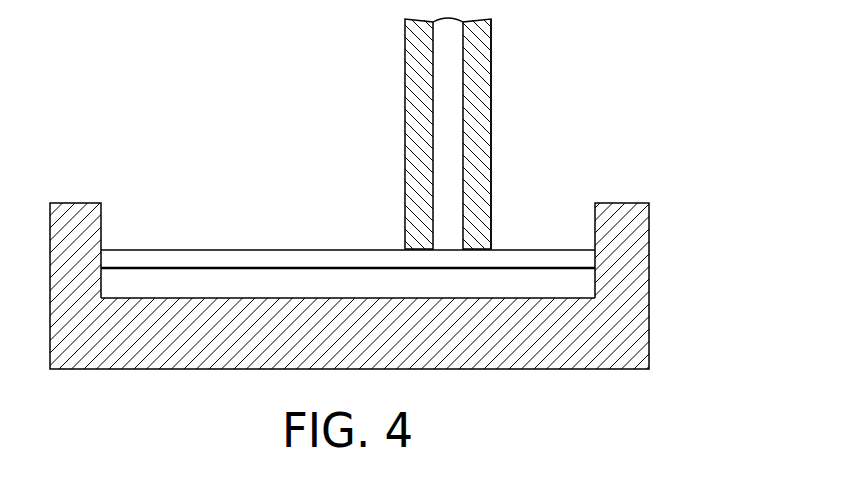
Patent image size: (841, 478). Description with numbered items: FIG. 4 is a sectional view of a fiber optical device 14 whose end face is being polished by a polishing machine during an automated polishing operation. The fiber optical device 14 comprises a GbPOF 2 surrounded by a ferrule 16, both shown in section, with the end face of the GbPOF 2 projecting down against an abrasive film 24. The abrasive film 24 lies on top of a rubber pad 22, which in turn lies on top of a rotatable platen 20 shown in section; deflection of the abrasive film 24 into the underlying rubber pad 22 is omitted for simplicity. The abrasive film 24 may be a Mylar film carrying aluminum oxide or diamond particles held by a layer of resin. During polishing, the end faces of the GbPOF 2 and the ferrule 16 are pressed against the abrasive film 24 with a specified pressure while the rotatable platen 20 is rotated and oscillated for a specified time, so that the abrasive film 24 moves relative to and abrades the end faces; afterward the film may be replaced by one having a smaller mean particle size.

The GbPOF 2 is at (445, 108).
The fiber optical device 14 is at (493, 72).
The ferrule 16 is at (492, 150).
The rotatable platen 20 is at (650, 327).
The rubber pad 22 is at (569, 288).
The abrasive film 24 is at (225, 251).